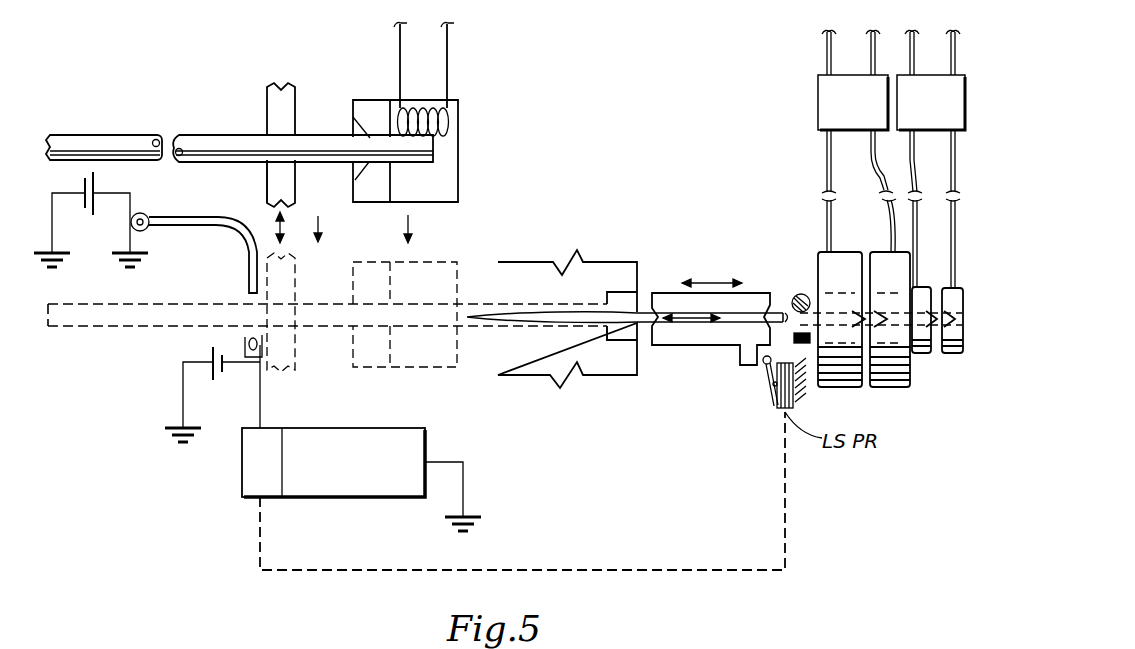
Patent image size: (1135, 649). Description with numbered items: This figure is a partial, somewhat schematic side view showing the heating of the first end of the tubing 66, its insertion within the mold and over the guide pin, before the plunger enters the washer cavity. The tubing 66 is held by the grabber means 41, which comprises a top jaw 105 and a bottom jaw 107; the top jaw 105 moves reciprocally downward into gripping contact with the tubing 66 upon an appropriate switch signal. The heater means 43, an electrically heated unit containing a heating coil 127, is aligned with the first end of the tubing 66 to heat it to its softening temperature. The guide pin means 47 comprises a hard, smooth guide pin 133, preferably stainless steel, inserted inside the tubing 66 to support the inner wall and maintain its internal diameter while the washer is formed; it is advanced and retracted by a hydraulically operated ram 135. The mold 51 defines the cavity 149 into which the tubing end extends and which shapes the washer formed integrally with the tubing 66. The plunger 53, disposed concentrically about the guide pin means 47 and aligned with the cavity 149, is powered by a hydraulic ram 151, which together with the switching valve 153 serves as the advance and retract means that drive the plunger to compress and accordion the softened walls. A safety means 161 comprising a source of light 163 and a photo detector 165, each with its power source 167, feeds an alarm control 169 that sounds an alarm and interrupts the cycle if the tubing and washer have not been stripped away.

The tubing 66 is at (222, 140).
The top jaw 105 is at (283, 108).
The grabber means 41 is at (307, 105).
The bottom jaw 107 is at (273, 181).
The heater means 43 is at (482, 128).
The heating coil 127 is at (425, 108).
The power sources 167 is at (92, 200).
The source of light 163 is at (145, 229).
The photo detector 165 is at (243, 335).
The safety means 161 is at (233, 402).
The alarm control 169 is at (248, 479).
The mold 51 is at (593, 272).
The guide pin 133 is at (567, 317).
The cavity 149 is at (623, 345).
The guide pin means 47 is at (667, 307).
The plunger 53 is at (748, 302).
The hydraulically operated ram 135 is at (943, 287).
The switching valve 153 is at (830, 118).
The hydraulic ram 151 is at (888, 392).